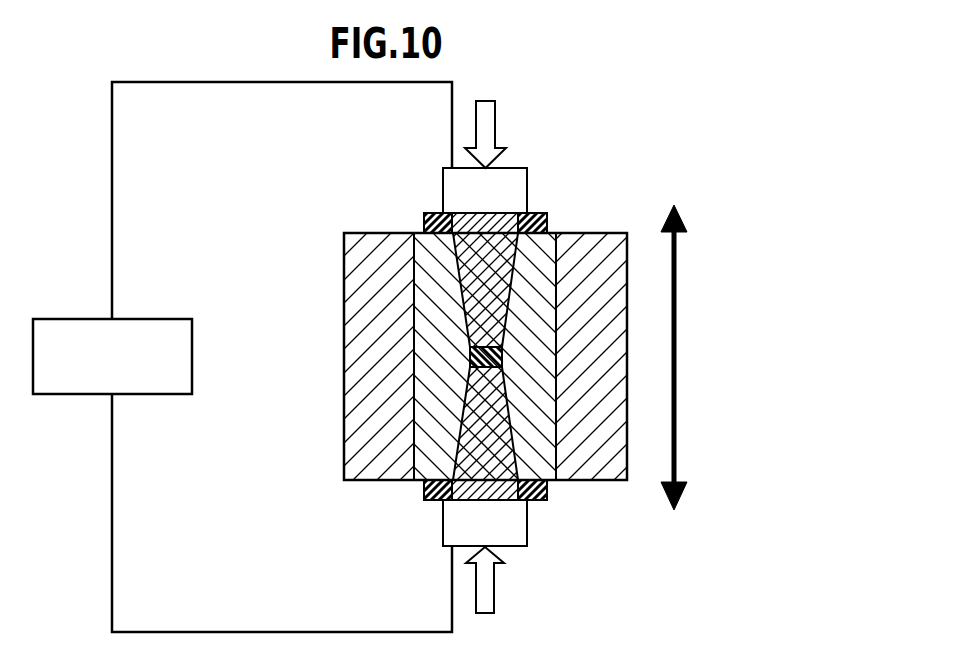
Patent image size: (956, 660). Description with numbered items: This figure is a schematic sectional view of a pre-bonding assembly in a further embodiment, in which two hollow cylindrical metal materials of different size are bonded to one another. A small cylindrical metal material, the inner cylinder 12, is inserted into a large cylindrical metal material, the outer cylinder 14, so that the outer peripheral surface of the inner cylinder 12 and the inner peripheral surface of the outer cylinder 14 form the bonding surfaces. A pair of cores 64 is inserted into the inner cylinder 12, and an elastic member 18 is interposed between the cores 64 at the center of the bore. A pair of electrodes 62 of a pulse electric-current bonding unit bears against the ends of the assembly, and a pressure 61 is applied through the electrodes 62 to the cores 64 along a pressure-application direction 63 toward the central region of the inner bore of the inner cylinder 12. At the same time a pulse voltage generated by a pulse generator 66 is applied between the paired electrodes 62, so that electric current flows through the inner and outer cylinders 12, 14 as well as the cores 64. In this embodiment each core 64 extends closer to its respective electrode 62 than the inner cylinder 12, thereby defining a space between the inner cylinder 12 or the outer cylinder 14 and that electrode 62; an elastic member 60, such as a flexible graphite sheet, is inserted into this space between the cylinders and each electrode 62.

The inner cylinder 12 is at (427, 402).
The outer cylinder 14 is at (344, 272).
The elastic member 18 is at (500, 355).
The elastic member 60 is at (430, 213).
The pressure 61 is at (497, 132).
The electrode 62 is at (443, 183).
The pressure-application direction 63 is at (676, 362).
The core 64 is at (495, 408).
The pulse generator 66 is at (53, 319).